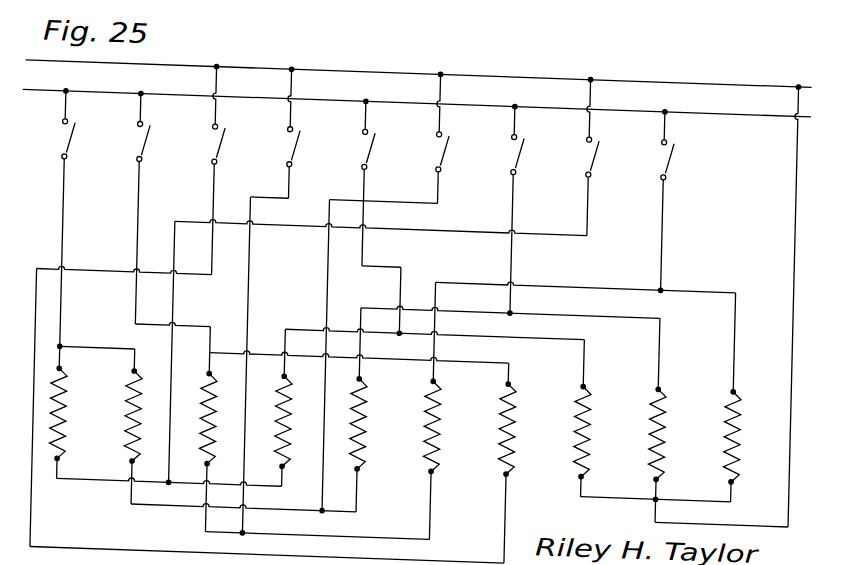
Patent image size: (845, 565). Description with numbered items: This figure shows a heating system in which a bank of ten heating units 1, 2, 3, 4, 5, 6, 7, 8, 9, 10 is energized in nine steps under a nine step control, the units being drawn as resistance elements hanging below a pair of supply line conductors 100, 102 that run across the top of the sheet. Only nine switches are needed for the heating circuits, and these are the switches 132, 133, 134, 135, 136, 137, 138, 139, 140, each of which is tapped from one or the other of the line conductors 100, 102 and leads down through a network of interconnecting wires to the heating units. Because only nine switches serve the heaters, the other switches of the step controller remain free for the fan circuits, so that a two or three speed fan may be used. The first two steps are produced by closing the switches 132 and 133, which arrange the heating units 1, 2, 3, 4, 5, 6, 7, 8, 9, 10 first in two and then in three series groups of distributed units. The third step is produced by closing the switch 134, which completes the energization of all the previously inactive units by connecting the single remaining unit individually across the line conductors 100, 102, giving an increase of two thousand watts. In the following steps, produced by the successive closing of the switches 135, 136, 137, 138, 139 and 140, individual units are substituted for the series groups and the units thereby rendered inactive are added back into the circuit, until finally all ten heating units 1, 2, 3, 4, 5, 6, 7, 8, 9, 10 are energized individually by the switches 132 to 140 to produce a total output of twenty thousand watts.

The first bus line 100 is at (351, 59).
The second bus line 102 is at (409, 92).
The switch 132 is at (73, 135).
The switch 133 is at (148, 135).
The switch 134 is at (223, 135).
The switch 135 is at (298, 135).
The switch 136 is at (373, 135).
The switch 137 is at (447, 135).
The switch 138 is at (522, 135).
The switch 139 is at (597, 135).
The switch 140 is at (672, 135).
The resistor section 1 is at (71, 389).
The resistor section 2 is at (133, 418).
The resistor section 3 is at (210, 419).
The resistor section 4 is at (284, 420).
The resistor section 5 is at (375, 410).
The resistor section 6 is at (433, 427).
The resistor section 7 is at (508, 430).
The resistor section 8 is at (583, 430).
The resistor section 9 is at (659, 429).
The resistor section 10 is at (733, 428).